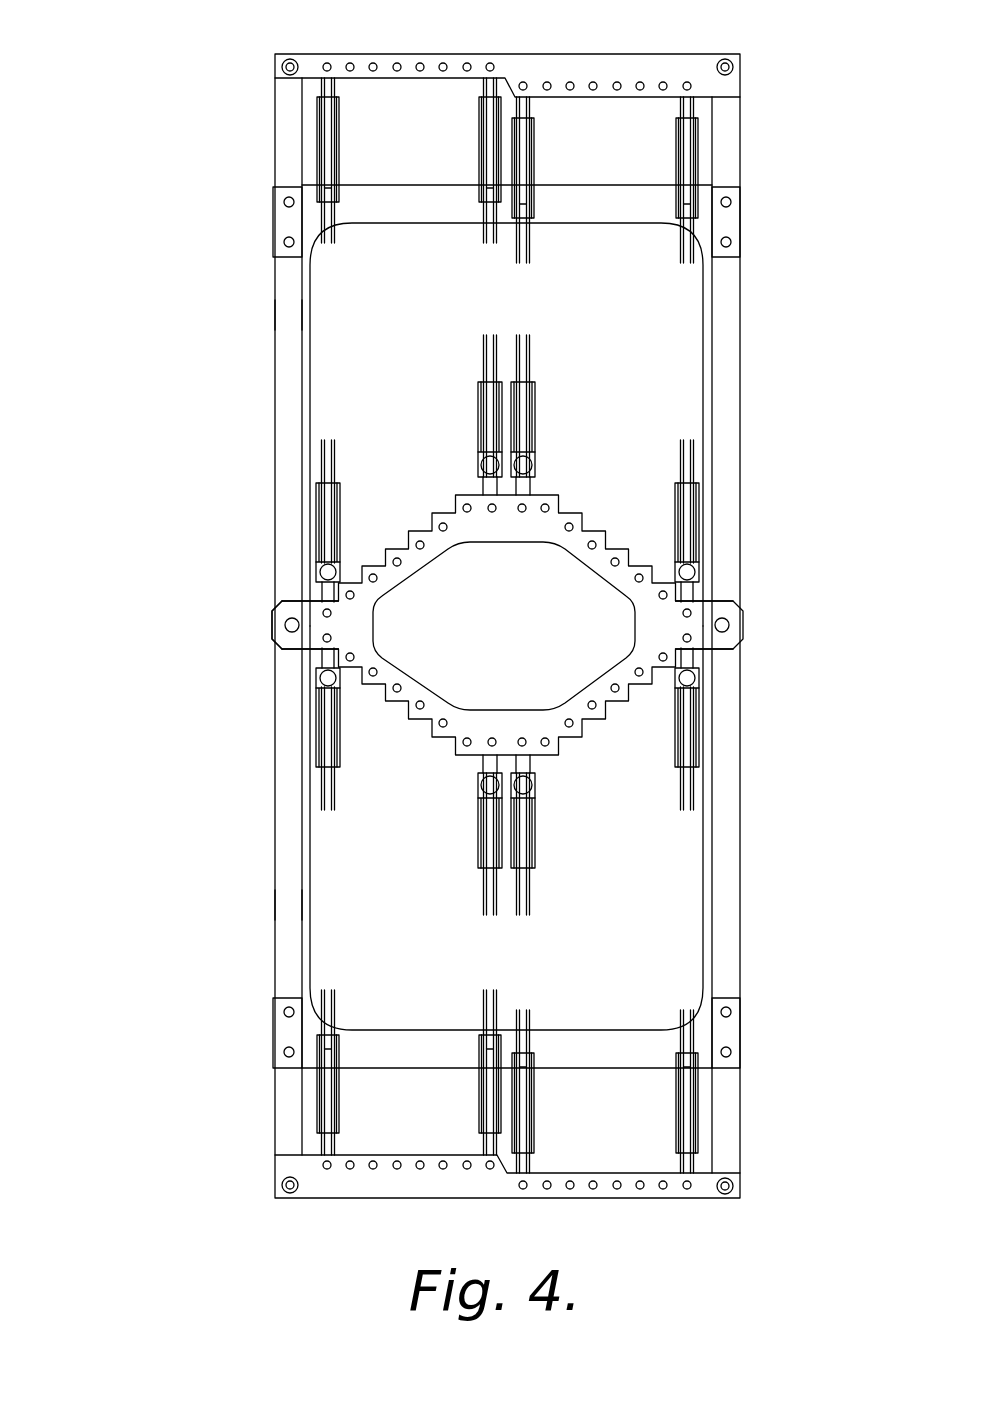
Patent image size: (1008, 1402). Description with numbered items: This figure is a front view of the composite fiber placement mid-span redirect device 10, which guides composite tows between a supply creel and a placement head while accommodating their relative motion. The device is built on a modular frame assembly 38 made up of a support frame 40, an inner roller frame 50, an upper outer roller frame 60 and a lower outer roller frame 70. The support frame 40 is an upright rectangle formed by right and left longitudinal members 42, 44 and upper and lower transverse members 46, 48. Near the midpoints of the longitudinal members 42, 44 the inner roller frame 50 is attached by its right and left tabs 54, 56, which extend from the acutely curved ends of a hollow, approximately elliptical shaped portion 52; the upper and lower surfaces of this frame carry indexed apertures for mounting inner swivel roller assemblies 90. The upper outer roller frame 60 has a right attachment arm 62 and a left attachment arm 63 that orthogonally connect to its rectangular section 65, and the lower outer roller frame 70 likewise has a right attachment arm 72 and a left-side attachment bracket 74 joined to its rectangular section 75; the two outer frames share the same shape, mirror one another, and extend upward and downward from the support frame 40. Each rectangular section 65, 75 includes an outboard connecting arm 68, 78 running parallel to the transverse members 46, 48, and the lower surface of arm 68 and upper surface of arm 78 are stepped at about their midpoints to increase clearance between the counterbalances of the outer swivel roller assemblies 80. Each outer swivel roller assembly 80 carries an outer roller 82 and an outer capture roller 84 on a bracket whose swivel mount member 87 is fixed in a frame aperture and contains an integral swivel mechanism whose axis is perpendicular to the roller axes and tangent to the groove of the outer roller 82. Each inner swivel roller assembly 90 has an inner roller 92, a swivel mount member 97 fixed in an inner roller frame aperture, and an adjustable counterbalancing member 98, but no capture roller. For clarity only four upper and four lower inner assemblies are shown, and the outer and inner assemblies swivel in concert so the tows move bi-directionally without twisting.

The mid-span redirect device 10 is at (148, 68).
The frame assembly 38 is at (180, 322).
The support frame 40 is at (275, 905).
The right longitudinal member 42 is at (728, 462).
The left longitudinal member 44 is at (300, 386).
The upper transverse member 46 is at (418, 214).
The lower transverse member 48 is at (418, 1028).
The inner roller frame 50 is at (250, 616).
The elliptical shaped portion 52 is at (527, 544).
The right tab 54 is at (740, 619).
The left tab 56 is at (274, 633).
The upper outer roller frame 60 is at (818, 82).
The right attachment arm 62 is at (740, 160).
The left attachment arm 63 is at (288, 122).
The rectangular section 65 is at (289, 58).
The outboard connecting arm 68 is at (610, 64).
The lower outer roller frame 70 is at (808, 1147).
The right attachment arm 72 is at (740, 1094).
The bottom left mounting bracket 74 is at (283, 1090).
The rectangular section 75 is at (280, 1186).
The outboard connecting arm 78 is at (440, 1190).
The outer swivel roller assembly 80 is at (543, 252).
The outer roller 82 is at (505, 228).
The outer capture roller 84 is at (485, 130).
The swivel mount member 87 is at (336, 100).
The inner swivel roller assembly 90 is at (476, 378).
The inner roller 92 is at (521, 350).
The swivel mount member 97 is at (486, 490).
The counterbalancing member 98 is at (336, 566).